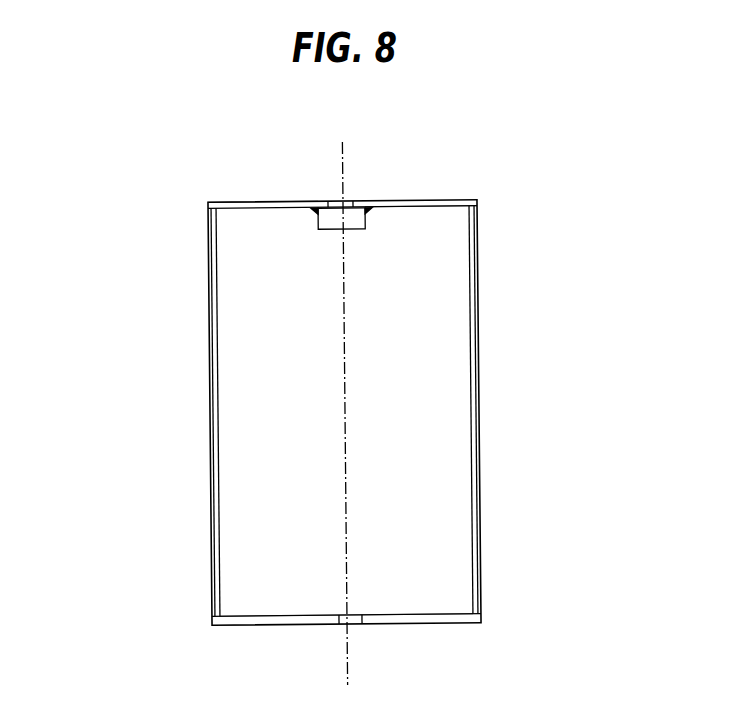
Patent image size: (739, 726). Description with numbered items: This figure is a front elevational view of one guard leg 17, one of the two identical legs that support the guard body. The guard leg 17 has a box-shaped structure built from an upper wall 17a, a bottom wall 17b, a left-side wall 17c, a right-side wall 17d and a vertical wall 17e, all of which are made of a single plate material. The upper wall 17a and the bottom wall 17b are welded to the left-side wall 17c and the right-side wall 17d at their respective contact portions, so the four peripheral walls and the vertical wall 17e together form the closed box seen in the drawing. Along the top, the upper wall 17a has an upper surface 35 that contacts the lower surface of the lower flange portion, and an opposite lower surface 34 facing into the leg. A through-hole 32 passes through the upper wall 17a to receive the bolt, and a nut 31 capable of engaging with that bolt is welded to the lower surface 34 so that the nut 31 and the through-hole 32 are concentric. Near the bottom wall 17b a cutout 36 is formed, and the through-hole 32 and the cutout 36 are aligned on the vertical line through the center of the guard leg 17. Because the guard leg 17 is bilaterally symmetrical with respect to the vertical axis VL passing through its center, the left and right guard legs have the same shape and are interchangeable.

The guard leg 17 is at (457, 273).
The upper wall 17a is at (383, 200).
The bottom wall 17b is at (428, 623).
The left-side wall 17c is at (210, 446).
The right-side wall 17d is at (460, 512).
The vertical wall 17e is at (393, 375).
The nut 31 is at (318, 218).
The through-hole 32 is at (329, 207).
The lower surface 34 is at (410, 207).
The upper surface 35 is at (242, 200).
The cutout 36 is at (353, 625).
The vertical axis VL is at (343, 400).